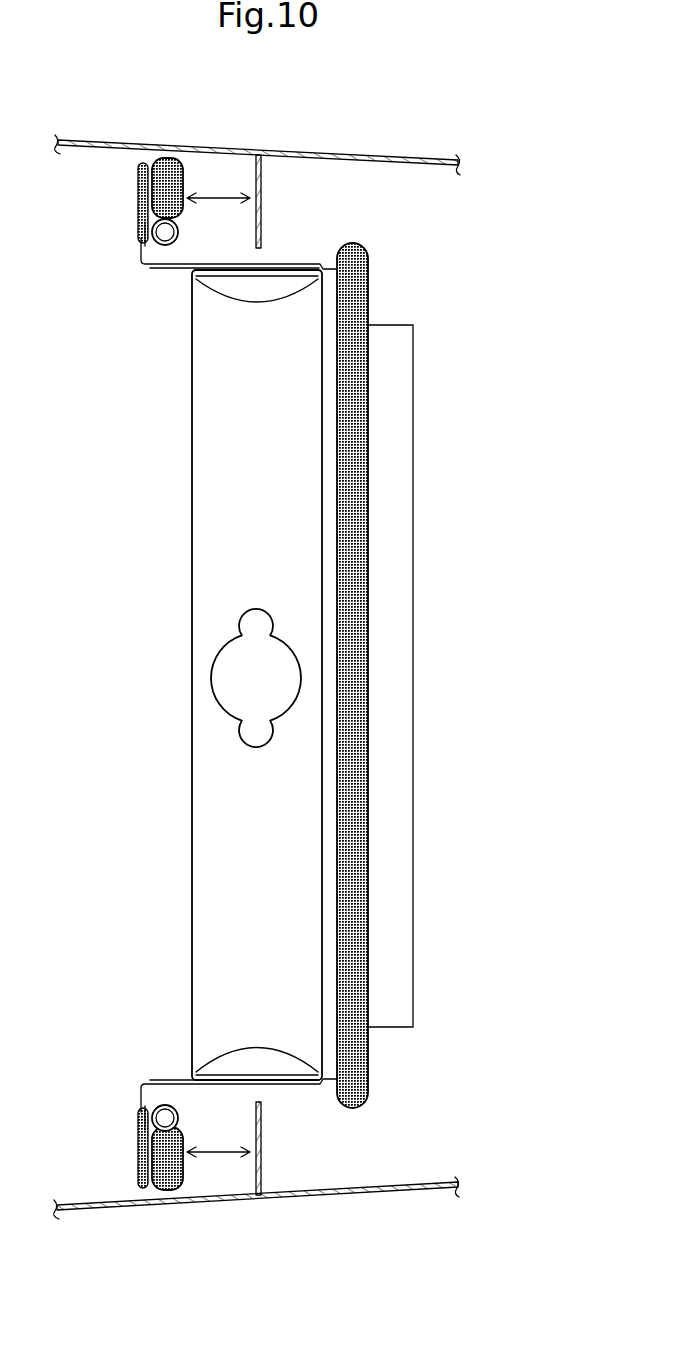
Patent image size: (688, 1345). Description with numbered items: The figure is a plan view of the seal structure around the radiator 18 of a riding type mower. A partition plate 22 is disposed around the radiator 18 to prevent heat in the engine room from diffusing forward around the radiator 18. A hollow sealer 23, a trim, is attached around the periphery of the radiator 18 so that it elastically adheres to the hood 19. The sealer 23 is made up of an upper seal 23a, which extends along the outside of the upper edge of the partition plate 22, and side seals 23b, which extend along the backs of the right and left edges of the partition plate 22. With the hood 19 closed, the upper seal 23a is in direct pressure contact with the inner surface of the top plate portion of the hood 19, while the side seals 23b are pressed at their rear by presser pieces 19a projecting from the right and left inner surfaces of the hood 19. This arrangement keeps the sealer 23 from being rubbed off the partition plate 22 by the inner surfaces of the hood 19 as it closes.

The radiator 18 is at (192, 788).
The hood 19 is at (359, 150).
The presser pieces 19a is at (262, 199).
The partition plate 22 is at (302, 1087).
The hollow sealer 23 is at (344, 681).
The upper seal 23a is at (358, 503).
The side seals 23b is at (180, 177).